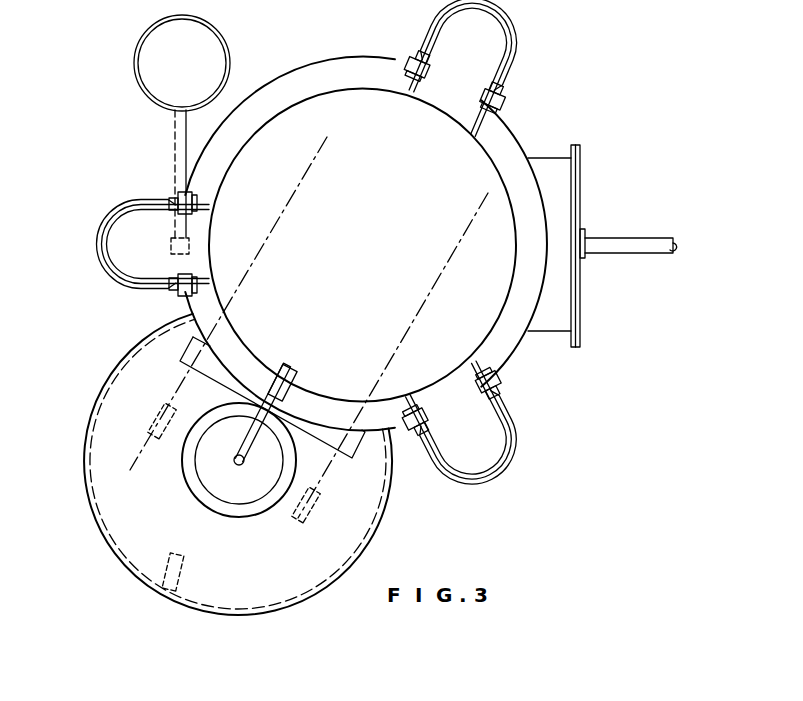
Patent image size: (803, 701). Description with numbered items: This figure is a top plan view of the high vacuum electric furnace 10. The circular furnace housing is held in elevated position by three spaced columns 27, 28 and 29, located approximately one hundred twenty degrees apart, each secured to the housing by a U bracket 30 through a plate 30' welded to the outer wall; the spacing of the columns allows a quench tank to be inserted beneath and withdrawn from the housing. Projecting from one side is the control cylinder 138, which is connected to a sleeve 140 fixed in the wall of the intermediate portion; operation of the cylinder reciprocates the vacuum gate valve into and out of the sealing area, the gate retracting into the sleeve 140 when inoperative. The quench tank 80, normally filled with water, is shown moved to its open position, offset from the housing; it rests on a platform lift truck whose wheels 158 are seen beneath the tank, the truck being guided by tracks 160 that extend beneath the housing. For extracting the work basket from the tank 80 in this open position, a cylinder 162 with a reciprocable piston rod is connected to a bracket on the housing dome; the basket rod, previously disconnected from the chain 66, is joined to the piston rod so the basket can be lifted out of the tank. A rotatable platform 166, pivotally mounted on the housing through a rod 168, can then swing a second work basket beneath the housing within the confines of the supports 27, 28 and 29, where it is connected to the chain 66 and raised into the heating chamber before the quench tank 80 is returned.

The high vacuum electric furnace 10 is at (548, 101).
The column 27 is at (481, 455).
The column 28 is at (130, 231).
The column 29 is at (497, 48).
The U bracket 30 is at (328, 249).
The plate 30' is at (335, 243).
The chain 66 is at (239, 461).
The quench tank 80 is at (276, 618).
The control cylinder 138 is at (627, 243).
The sleeve 140 is at (549, 159).
The wheels 158 is at (157, 422).
The tracks 160 is at (260, 252).
The cylinder 162 is at (240, 465).
The rotatable platform 166 is at (212, 52).
The rod 168 is at (172, 157).